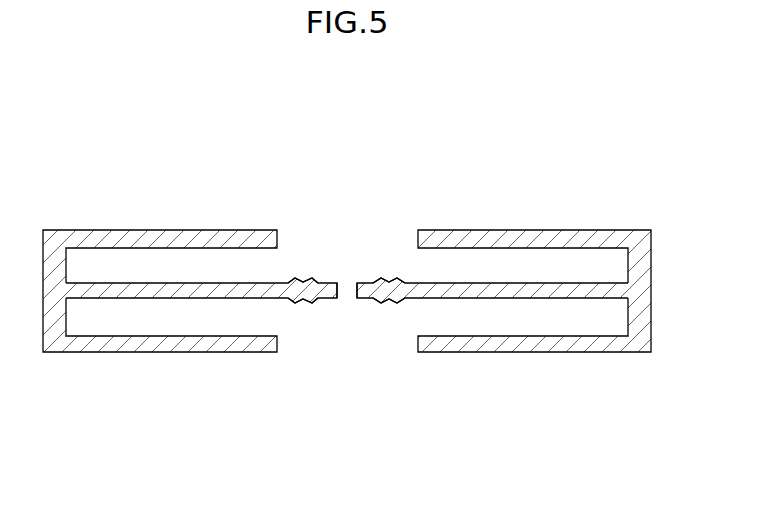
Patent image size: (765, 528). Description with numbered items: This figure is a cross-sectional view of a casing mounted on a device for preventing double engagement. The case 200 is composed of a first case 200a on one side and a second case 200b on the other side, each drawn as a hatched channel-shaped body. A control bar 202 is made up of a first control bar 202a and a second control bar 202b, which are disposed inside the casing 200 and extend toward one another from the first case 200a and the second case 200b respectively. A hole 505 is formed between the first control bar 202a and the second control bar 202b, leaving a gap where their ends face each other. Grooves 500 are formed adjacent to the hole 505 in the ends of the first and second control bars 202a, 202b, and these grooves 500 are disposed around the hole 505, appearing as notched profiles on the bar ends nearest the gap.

The case 200 is at (477, 486).
The first case 200a is at (247, 343).
The second case 200b is at (437, 343).
The control bar 202 is at (235, 170).
The first control bar 202a is at (257, 291).
The second control bar 202b is at (431, 291).
The grooves 500 is at (388, 303).
The hole 505 is at (347, 287).